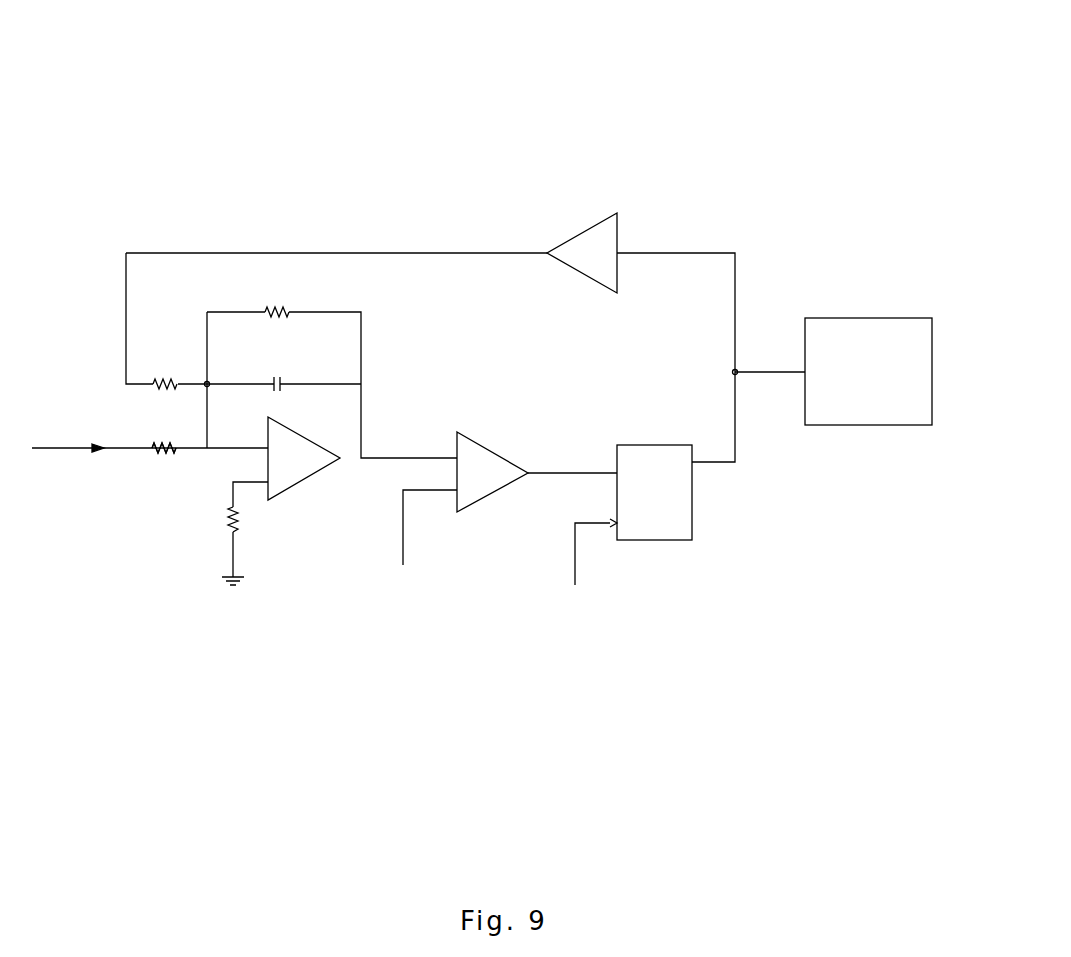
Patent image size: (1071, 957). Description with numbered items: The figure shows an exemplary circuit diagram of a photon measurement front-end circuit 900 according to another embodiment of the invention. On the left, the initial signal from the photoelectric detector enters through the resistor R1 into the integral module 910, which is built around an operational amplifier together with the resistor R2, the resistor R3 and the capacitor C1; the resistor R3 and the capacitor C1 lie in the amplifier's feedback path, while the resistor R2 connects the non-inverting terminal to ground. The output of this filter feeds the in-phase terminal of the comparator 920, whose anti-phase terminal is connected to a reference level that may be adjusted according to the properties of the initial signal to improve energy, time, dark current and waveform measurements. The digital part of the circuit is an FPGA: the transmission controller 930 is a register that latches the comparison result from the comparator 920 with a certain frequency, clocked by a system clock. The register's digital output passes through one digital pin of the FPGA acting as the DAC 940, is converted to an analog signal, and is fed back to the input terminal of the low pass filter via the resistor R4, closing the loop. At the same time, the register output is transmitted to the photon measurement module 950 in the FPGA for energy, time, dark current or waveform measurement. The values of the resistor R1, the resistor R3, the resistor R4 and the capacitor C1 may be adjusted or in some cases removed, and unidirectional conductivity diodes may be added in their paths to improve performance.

The photon measurement front-end circuit 900 is at (663, 43).
The integral module 910 is at (289, 428).
The comparator 920 is at (482, 433).
The transmission controller 930 is at (628, 446).
The DAC 940 is at (601, 216).
The photon measurement module 950 is at (862, 318).
The resistor R1 is at (162, 436).
The resistor R2 is at (247, 519).
The resistor R3 is at (277, 297).
The resistor R4 is at (165, 371).
The capacitor C1 is at (276, 370).